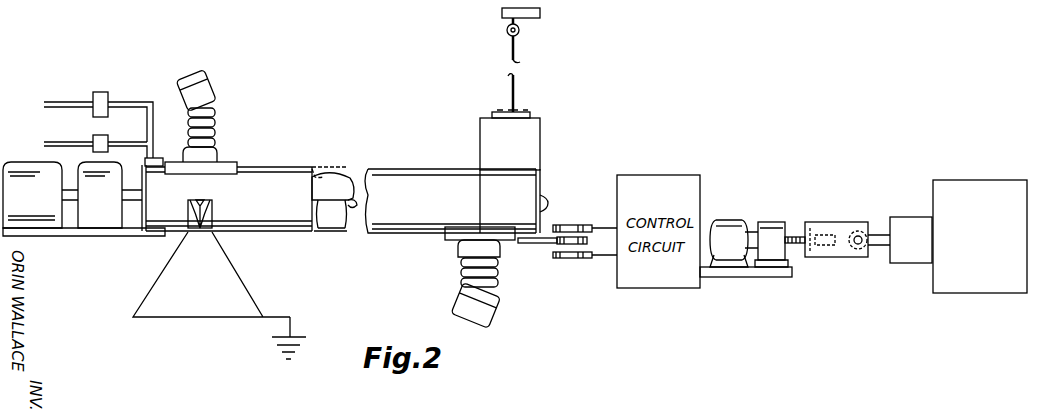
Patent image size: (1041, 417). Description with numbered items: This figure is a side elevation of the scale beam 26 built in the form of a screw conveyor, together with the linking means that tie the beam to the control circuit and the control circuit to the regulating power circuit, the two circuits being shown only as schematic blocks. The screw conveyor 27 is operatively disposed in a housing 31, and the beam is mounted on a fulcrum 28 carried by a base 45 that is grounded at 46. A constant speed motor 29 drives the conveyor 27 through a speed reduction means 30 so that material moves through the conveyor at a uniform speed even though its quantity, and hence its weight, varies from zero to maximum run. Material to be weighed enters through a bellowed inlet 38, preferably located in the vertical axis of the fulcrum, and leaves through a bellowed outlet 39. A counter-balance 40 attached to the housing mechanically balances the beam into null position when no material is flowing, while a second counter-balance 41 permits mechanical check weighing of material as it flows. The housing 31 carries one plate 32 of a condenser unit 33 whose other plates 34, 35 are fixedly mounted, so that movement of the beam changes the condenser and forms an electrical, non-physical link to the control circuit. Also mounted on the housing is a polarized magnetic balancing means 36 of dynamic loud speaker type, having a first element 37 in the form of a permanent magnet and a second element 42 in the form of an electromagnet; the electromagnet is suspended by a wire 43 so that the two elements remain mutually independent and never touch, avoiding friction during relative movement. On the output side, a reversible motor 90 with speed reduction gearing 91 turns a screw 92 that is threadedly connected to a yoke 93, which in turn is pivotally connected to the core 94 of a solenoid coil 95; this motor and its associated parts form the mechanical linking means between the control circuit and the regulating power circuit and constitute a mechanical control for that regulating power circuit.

The scale beam 26 is at (416, 148).
The screw conveyor 27 is at (332, 180).
The fulcrum 28 is at (200, 228).
The constant speed motor 29 is at (22, 166).
The speed reduction means 30 is at (100, 218).
The housing 31 is at (349, 178).
The plate 32 is at (545, 246).
The condenser unit 33 is at (566, 204).
The fixedly mounted plate 34 is at (575, 225).
The fixedly mounted plate 35 is at (577, 259).
The polarized magnetic balancing means 36 is at (554, 137).
The permanent magnet element 37 is at (485, 126).
The bellowed inlet 38 is at (219, 114).
The bellowed outlet 39 is at (463, 303).
The counter-balance 40 is at (93, 140).
The second counter-balance 41 is at (105, 92).
The electromagnet element 42 is at (520, 114).
The wire 43 is at (517, 82).
The base 45 is at (160, 287).
The ground 46 is at (298, 340).
The reversible motor 90 is at (726, 221).
The speed reduction gearing 91 is at (773, 222).
The screw 92 is at (797, 236).
The yoke 93 is at (830, 225).
The core 94 is at (877, 233).
The solenoid coil 95 is at (913, 222).